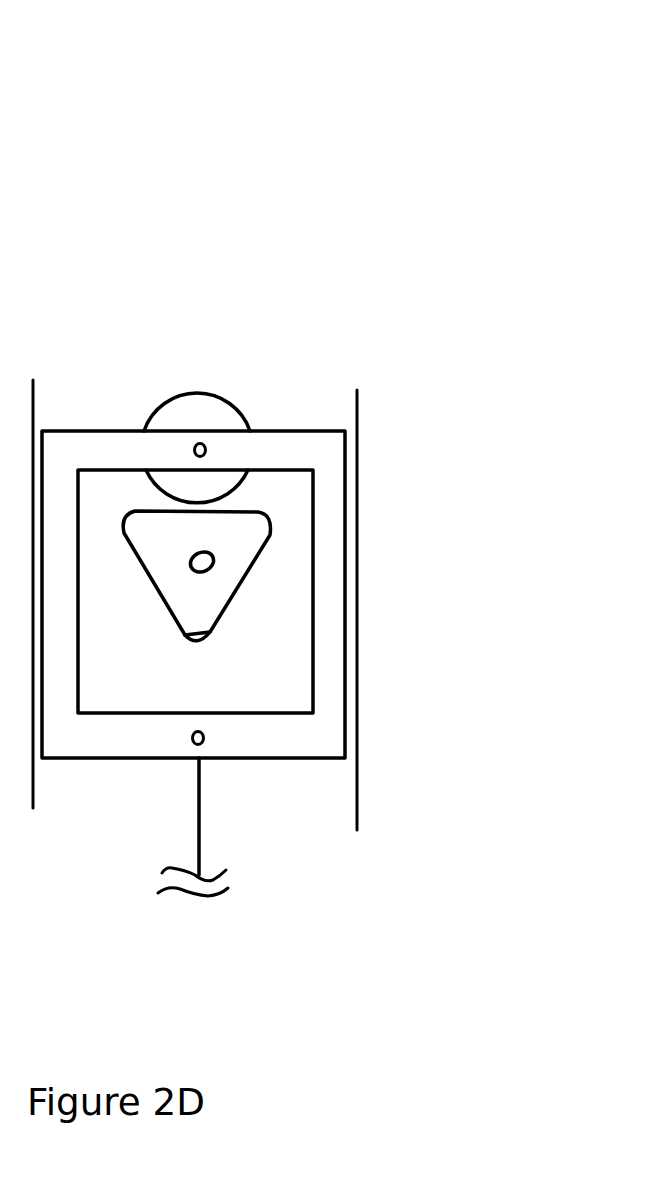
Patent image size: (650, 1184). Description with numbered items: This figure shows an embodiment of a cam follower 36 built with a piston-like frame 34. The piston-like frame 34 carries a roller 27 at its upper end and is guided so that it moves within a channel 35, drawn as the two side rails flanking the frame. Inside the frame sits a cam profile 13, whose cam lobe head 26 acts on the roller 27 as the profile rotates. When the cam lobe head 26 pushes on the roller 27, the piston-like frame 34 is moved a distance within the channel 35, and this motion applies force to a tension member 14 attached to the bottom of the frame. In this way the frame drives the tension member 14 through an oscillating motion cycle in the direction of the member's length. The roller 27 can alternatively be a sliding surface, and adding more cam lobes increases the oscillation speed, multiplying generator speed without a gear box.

The cam follower 36 is at (146, 262).
The channel 35 is at (38, 393).
The piston-like frame 34 is at (305, 431).
The roller 27 is at (219, 388).
The cam profile 13 is at (163, 617).
The cam lobe head 26 is at (210, 638).
The tension member 14 is at (200, 818).